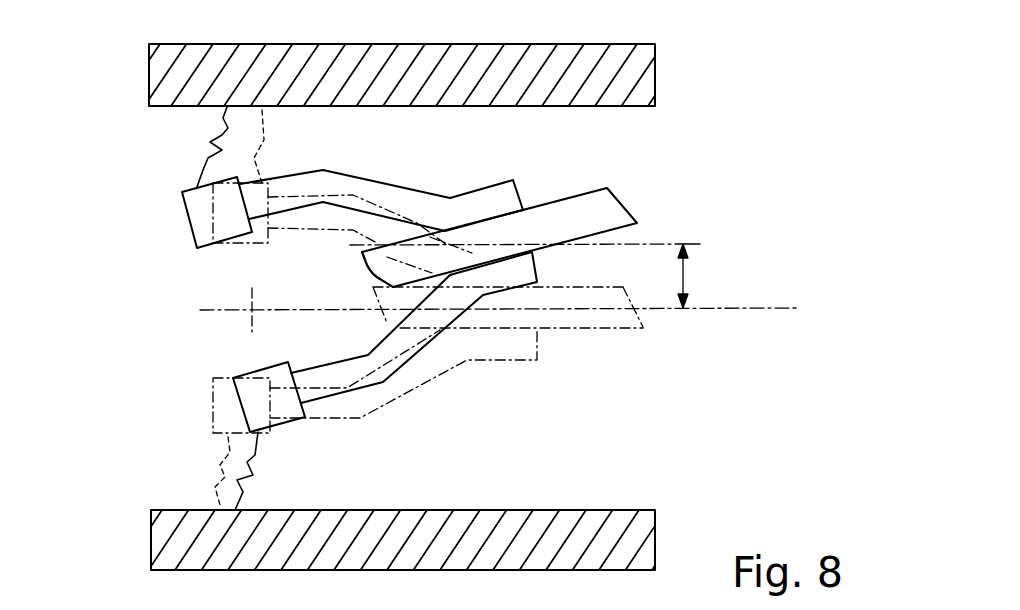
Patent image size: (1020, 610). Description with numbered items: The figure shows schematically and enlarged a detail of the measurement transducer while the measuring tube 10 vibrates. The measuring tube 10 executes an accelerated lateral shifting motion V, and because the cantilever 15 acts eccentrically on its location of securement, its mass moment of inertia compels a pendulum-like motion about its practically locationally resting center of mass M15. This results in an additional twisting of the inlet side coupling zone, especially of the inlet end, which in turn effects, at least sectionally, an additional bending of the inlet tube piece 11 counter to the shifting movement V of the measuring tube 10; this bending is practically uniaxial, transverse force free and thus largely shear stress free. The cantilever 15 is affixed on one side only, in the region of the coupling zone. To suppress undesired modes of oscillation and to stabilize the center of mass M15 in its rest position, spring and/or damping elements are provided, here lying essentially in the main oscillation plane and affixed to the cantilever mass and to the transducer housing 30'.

The transducer housing 30' is at (380, 307).
The cantilever 15 is at (265, 370).
The measuring tube 10 is at (612, 202).
The inlet tube piece 11 is at (391, 259).
The center of mass of the cantilever M15 is at (240, 313).
The lateral shifting motion V is at (693, 276).